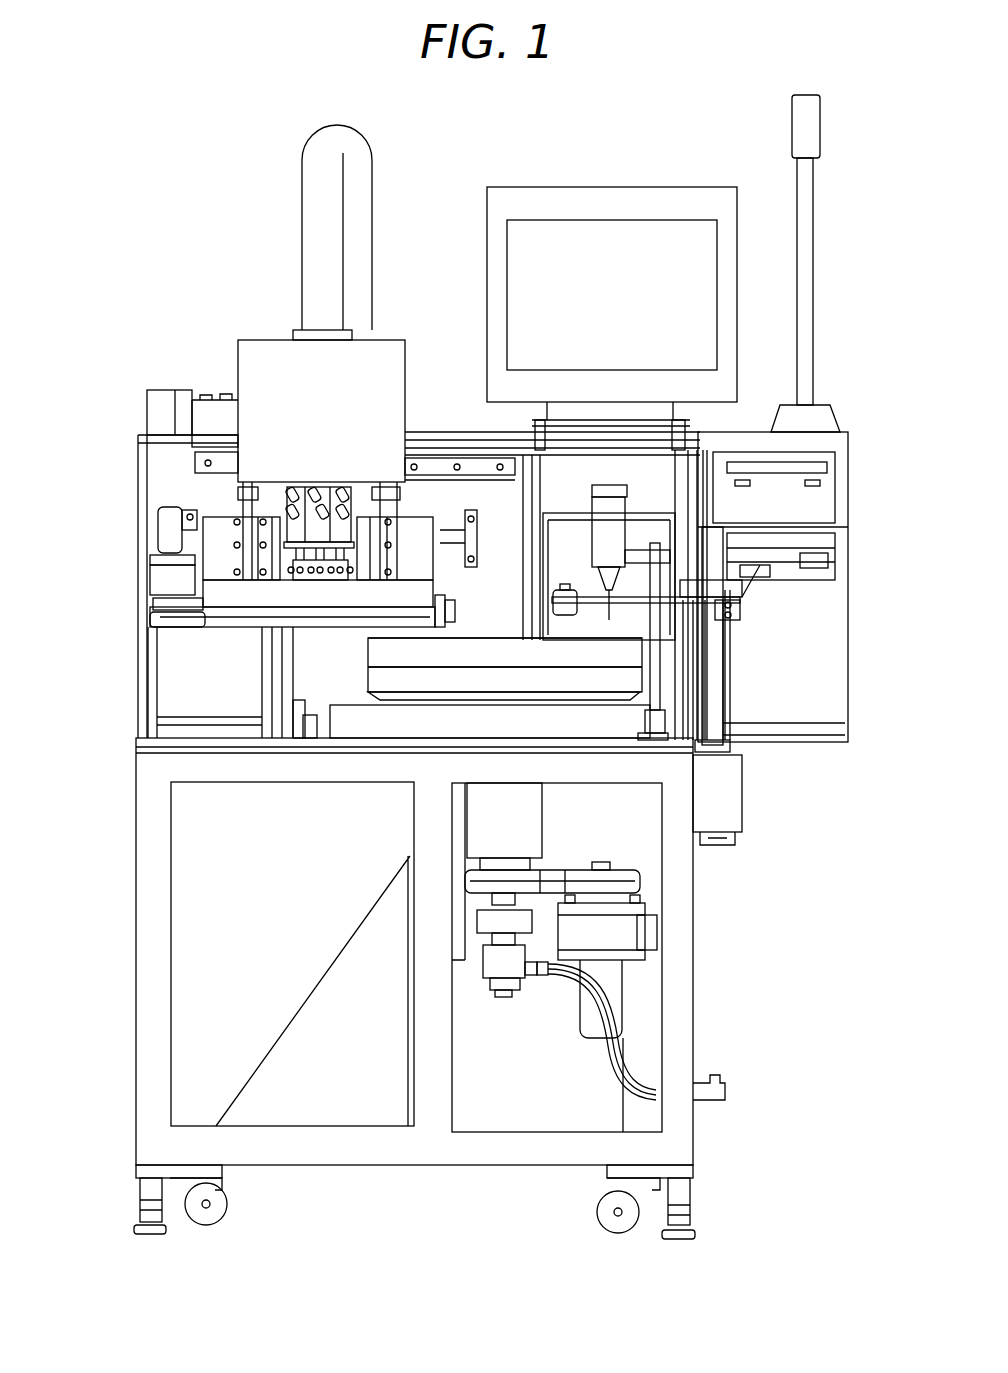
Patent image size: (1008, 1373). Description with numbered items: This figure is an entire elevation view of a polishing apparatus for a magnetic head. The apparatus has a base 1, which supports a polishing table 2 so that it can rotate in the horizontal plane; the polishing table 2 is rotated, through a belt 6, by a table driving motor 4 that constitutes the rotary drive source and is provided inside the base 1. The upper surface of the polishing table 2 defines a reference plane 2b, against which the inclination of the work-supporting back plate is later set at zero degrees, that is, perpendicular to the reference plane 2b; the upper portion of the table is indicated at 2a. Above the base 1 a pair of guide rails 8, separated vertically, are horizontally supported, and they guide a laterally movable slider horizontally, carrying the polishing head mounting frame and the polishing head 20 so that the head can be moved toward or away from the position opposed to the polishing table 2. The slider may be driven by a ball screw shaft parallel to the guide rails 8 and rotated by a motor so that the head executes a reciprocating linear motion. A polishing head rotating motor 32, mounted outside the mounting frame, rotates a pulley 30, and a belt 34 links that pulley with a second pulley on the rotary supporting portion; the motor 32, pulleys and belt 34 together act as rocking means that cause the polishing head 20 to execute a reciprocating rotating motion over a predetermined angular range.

The base 1 is at (147, 785).
The polishing table 2 is at (638, 653).
The stage upper plate 2a is at (622, 637).
The reference plane 2b is at (593, 683).
The table driving motor 4 is at (618, 988).
The belt 6 is at (640, 882).
The guide rails 8 is at (488, 605).
The polishing head 20 is at (290, 512).
The pulley 30 is at (172, 628).
The polishing head rotating motor 32 is at (157, 573).
The belt 34 is at (195, 612).